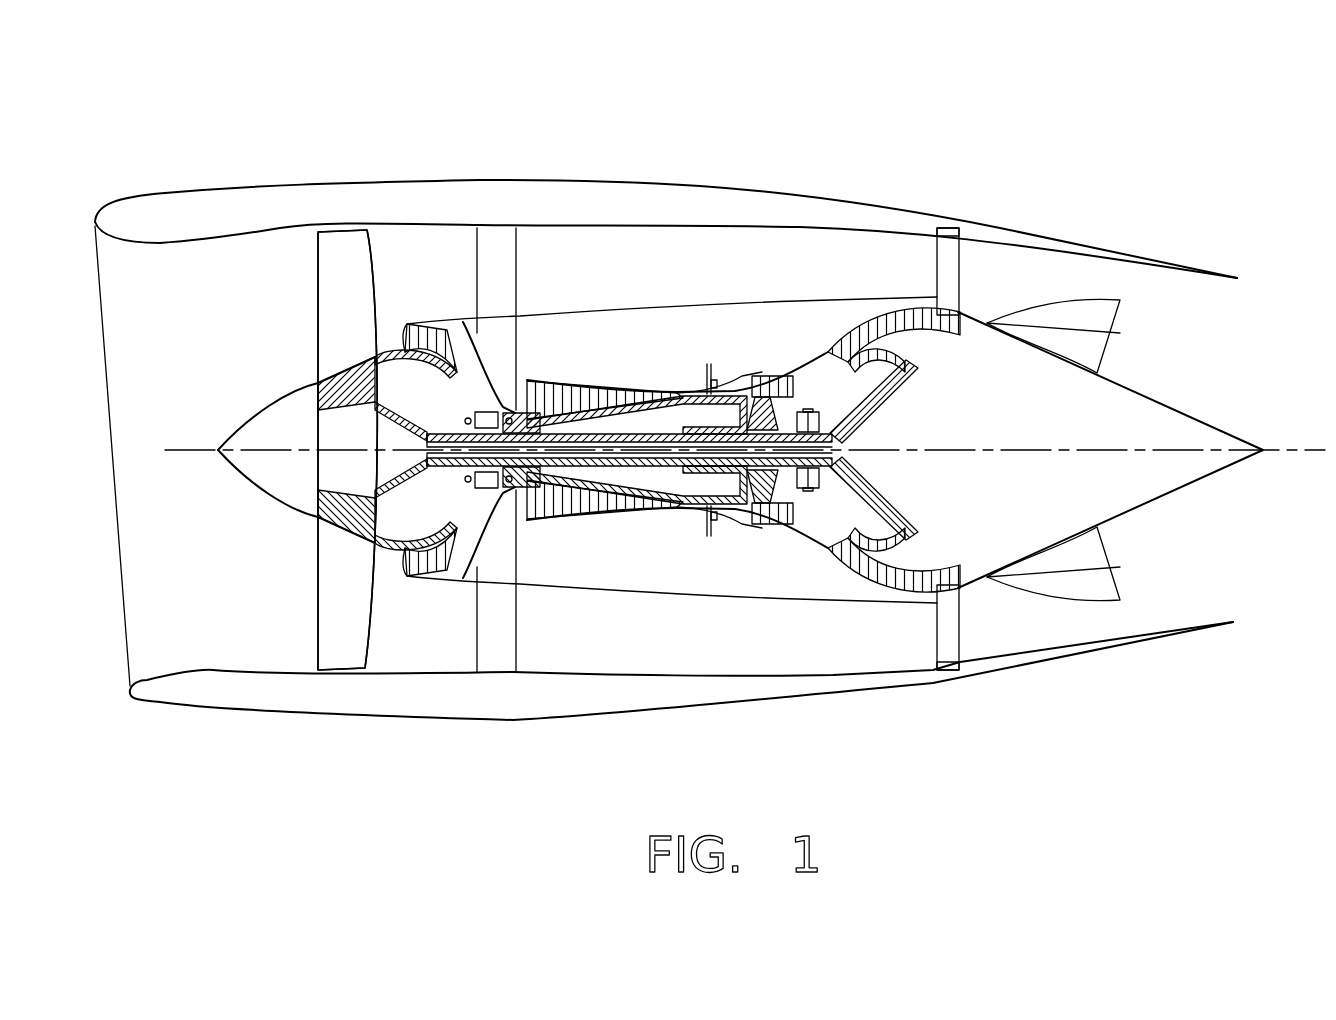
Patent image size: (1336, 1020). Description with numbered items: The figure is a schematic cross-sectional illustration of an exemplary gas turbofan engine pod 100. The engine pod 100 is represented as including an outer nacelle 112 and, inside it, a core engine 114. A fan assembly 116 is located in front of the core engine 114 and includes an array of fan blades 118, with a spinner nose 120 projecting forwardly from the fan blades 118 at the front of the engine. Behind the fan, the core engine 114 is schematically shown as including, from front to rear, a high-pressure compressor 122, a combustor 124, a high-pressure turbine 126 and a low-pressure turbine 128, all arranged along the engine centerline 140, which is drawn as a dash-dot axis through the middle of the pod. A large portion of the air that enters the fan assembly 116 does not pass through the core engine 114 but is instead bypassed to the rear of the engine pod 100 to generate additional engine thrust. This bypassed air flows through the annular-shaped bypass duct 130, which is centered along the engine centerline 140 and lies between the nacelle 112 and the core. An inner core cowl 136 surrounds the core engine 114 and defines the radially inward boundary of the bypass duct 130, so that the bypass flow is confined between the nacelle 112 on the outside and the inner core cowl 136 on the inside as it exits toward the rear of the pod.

The gas turbofan engine pod 100 is at (978, 167).
The nacelle 112 is at (600, 182).
The core engine 114 is at (652, 302).
The fan assembly 116 is at (298, 626).
The fan blades 118 is at (338, 307).
The spinner nose 120 is at (273, 400).
The high-pressure compressor 122 is at (564, 381).
The combustor 124 is at (733, 371).
The high-pressure turbine 126 is at (769, 364).
The low-pressure turbine 128 is at (866, 311).
The bypass duct 130 is at (606, 282).
The inner core cowl 136 is at (670, 595).
The engine centerline 140 is at (1300, 448).